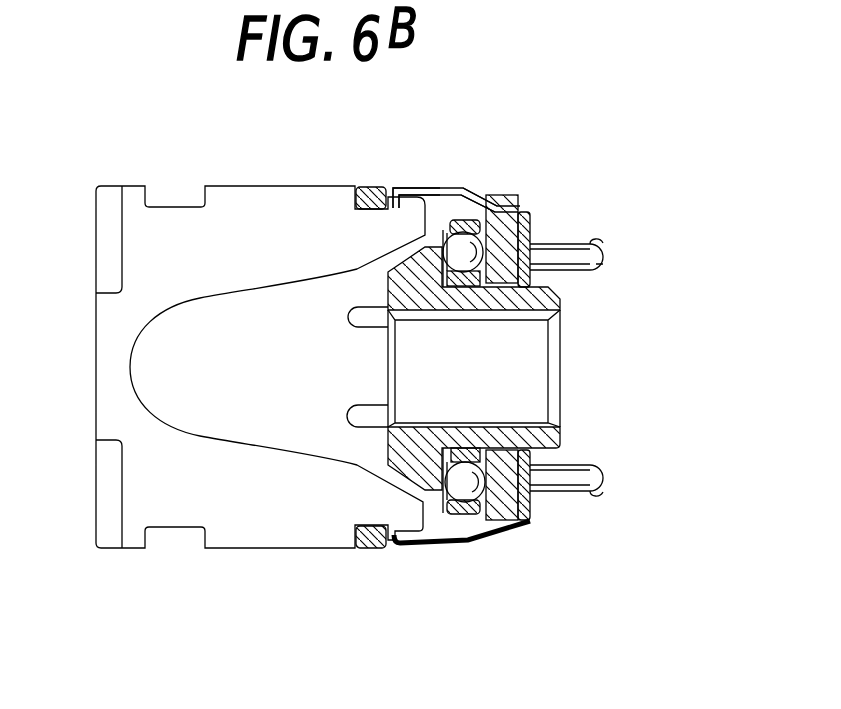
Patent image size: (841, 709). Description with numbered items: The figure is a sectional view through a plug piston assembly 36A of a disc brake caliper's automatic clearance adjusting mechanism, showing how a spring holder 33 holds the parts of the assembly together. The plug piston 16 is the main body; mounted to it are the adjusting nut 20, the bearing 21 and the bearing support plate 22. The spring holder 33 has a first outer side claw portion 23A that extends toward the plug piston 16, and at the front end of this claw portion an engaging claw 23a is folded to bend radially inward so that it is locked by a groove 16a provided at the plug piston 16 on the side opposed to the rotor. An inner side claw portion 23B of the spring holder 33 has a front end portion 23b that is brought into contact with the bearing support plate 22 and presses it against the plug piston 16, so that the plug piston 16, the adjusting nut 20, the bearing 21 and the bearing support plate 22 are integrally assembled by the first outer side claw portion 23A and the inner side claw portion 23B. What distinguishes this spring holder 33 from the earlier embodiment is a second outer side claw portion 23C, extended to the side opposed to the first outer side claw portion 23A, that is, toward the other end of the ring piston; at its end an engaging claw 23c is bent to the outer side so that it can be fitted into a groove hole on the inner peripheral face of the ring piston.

The plug piston 16 is at (249, 218).
The groove 16a is at (389, 546).
The adjusting nut 20 is at (406, 456).
The bearing 21 is at (466, 514).
The bearing support plate 22 is at (507, 538).
The first outer side claw portion 23A is at (462, 188).
The engaging claw 23a is at (393, 190).
The spring holder 33 is at (448, 184).
The plug piston assembly 36A is at (347, 164).
The inner side claw portion 23B is at (536, 225).
The engaging claw 23c is at (590, 240).
The second outer side claw portion 23C is at (594, 267).
The front end portion 23b is at (530, 460).